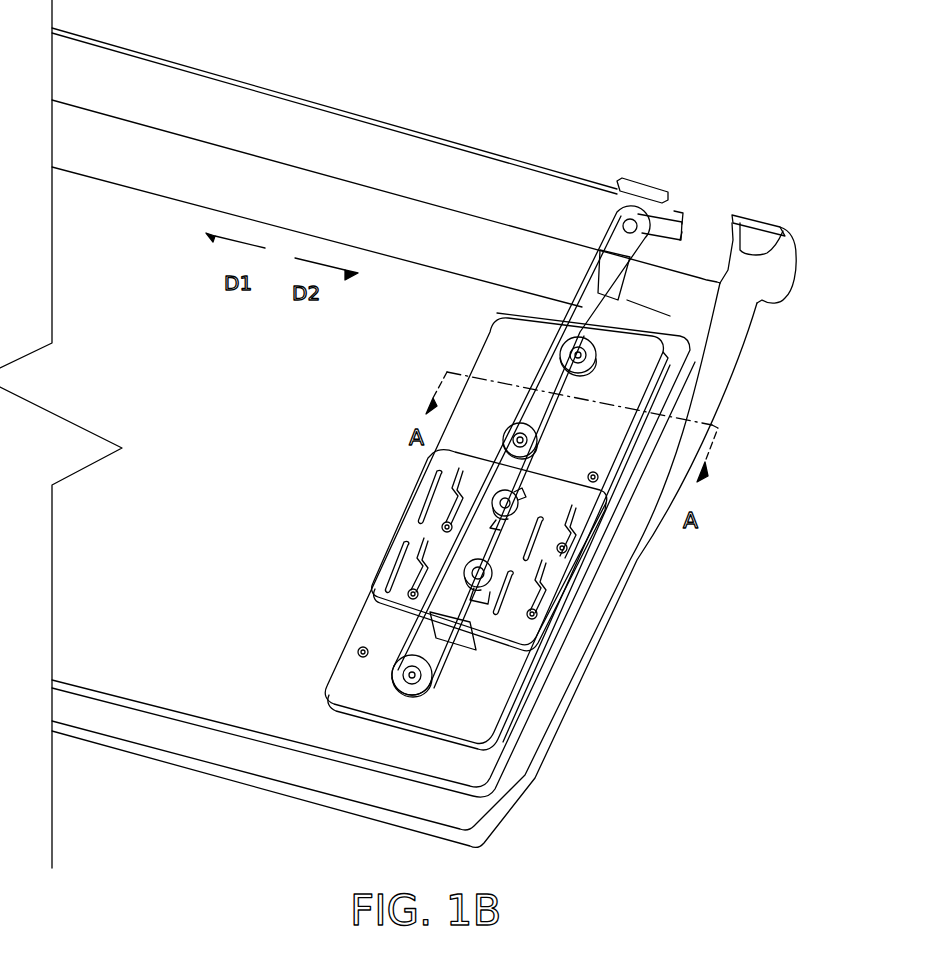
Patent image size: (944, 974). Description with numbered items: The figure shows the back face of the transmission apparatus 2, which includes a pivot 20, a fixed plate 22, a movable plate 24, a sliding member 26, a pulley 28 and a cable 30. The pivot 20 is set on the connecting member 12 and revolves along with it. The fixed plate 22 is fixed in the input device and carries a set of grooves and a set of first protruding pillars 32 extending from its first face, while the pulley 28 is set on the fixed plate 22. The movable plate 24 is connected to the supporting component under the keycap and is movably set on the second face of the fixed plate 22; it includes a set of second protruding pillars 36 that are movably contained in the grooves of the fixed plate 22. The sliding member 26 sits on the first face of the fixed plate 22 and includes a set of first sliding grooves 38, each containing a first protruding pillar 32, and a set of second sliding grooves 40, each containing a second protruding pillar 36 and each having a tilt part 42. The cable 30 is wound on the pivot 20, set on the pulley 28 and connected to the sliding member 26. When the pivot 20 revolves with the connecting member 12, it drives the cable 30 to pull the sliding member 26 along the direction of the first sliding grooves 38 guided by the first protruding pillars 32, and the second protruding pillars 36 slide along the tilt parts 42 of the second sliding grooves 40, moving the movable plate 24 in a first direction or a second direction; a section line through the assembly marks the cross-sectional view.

The transmission apparatus 2 is at (668, 86).
The connecting member 12 is at (500, 183).
The pivot 20 is at (634, 222).
The fixed plate 22 is at (495, 355).
The movable plate 24 is at (672, 391).
The sliding member 26 is at (407, 527).
The pulley 28 is at (585, 352).
The cable 30 is at (575, 283).
The first protruding pillar 32 is at (530, 550).
The second protruding pillar 36 is at (590, 525).
The first sliding groove 38 is at (515, 605).
The second sliding groove 40 is at (545, 597).
The tilt part 42 is at (567, 551).